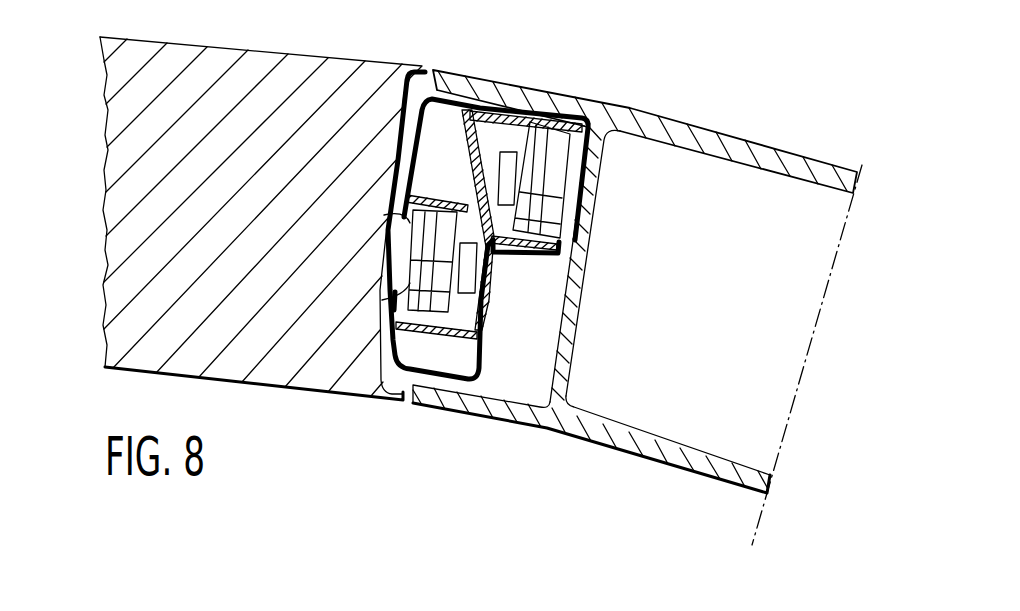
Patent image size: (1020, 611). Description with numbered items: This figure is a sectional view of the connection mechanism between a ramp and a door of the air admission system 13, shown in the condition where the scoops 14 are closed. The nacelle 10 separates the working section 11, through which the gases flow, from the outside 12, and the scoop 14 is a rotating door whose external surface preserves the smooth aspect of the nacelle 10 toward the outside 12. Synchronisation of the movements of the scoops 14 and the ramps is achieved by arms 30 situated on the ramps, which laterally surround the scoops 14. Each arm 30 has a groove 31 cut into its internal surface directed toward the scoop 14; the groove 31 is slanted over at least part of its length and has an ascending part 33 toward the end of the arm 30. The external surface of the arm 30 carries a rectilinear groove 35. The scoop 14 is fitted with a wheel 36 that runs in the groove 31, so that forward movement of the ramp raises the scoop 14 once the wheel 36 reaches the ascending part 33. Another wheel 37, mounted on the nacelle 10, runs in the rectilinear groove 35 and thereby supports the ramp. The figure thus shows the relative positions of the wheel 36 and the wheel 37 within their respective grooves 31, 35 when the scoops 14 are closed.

The nacelle 10 is at (776, 162).
The working section 11 is at (556, 542).
The outside 12 is at (388, 46).
The air admission system 13 is at (745, 67).
The scoop 14 is at (170, 33).
The arm 30 is at (440, 386).
The groove 31 is at (463, 157).
The ascending part 33 is at (494, 310).
The rectilinear groove 35 is at (488, 124).
The wheel 36 is at (440, 248).
The wheel 37 is at (548, 140).